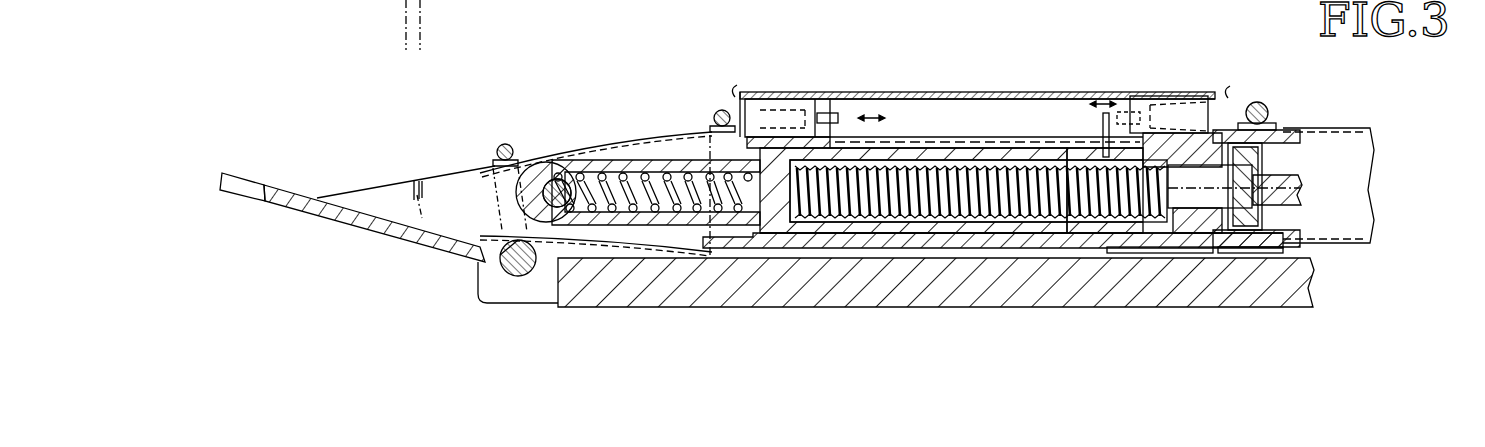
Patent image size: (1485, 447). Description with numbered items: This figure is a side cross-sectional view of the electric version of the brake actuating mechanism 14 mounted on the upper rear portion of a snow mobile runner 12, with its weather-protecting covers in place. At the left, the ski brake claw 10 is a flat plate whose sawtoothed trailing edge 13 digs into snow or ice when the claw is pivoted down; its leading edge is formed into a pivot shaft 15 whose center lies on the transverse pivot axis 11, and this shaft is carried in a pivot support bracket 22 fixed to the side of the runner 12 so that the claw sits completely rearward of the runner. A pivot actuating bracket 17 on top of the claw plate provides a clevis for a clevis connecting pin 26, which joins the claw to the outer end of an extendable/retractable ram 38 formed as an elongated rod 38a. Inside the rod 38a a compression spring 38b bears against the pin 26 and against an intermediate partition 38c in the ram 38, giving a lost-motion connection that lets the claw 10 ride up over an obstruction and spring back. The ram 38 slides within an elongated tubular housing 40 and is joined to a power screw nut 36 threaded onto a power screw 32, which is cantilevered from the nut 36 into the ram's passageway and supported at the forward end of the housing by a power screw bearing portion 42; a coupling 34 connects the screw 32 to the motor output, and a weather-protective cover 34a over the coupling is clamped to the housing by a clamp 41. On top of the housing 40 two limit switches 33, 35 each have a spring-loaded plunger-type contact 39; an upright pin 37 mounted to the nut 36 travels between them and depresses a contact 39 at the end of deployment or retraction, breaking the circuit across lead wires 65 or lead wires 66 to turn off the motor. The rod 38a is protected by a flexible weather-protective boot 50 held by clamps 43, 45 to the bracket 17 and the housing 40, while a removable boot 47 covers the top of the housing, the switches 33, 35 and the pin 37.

The ski brake claw 10 is at (341, 172).
The transverse pivot axis 11 is at (517, 262).
The runner 12 is at (1312, 282).
The sawtoothed trailing edge 13 is at (248, 172).
The brake actuating mechanism 14 is at (1020, 80).
The pivot shaft 15 is at (528, 270).
The pivot actuating bracket 17 is at (417, 180).
The pivot support bracket 22 is at (478, 284).
The clevis connecting pin 26 is at (552, 163).
The power screw 32 is at (1040, 158).
The limit switch 33 is at (822, 100).
The coupling 34 is at (1300, 178).
The weather-protective cover 34a is at (1330, 240).
The limit switch 35 is at (1195, 98).
The power screw nut 36 is at (1133, 235).
The upright pin 37 is at (1108, 115).
The ram 38 is at (903, 235).
The elongated rod 38a is at (640, 160).
The compression spring 38b is at (618, 212).
The intermediate partition 38c is at (778, 250).
The plunger-type contact 39 is at (845, 115).
The tubular housing 40 is at (935, 137).
The clamp 41 is at (1268, 110).
The power screw bearing portion 42 is at (1222, 255).
The clamp 43 is at (509, 145).
The clamp 45 is at (716, 110).
The removable boot 47 is at (1078, 99).
The weather-protective boot 50 is at (608, 140).
The lead wires 65 is at (738, 88).
The lead wires 66 is at (1234, 90).